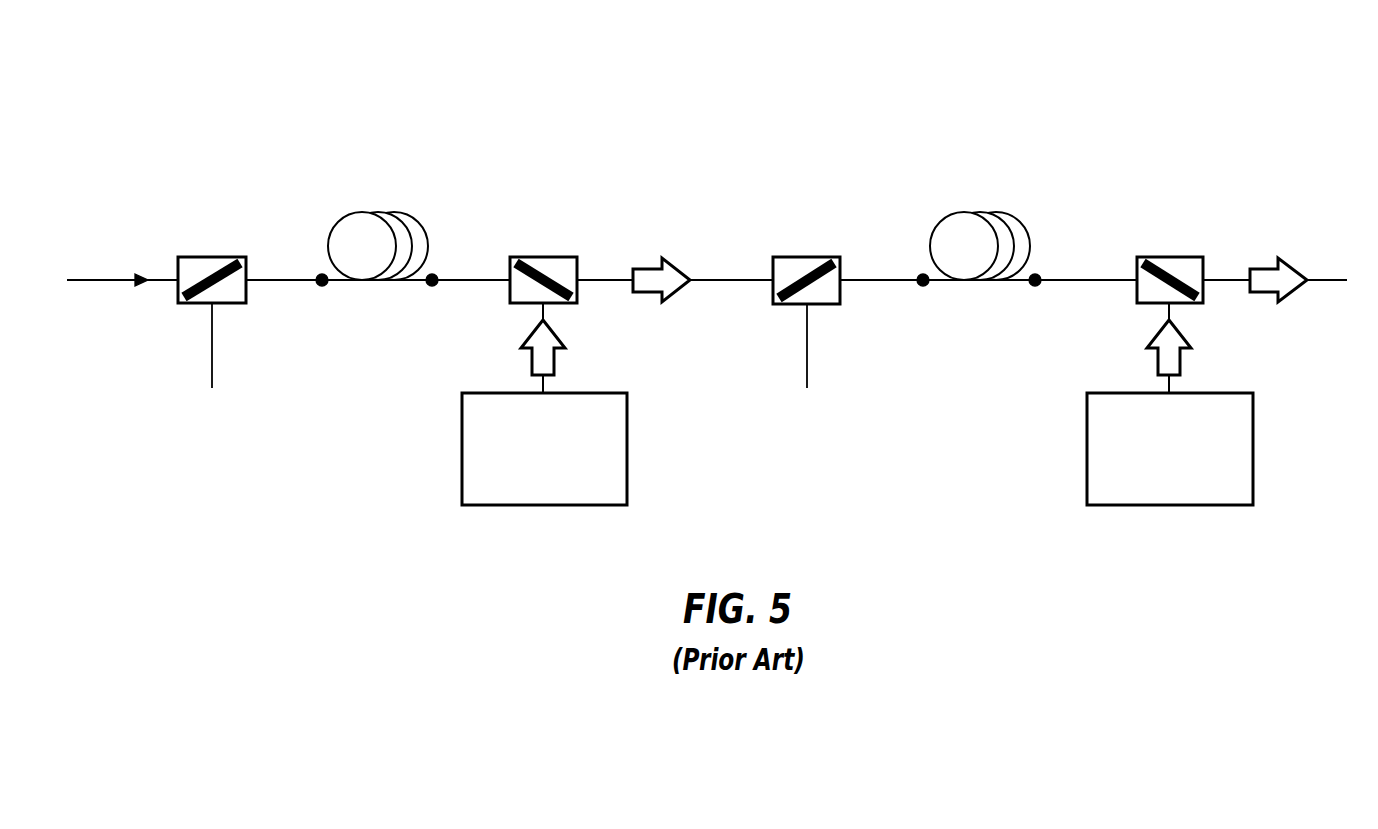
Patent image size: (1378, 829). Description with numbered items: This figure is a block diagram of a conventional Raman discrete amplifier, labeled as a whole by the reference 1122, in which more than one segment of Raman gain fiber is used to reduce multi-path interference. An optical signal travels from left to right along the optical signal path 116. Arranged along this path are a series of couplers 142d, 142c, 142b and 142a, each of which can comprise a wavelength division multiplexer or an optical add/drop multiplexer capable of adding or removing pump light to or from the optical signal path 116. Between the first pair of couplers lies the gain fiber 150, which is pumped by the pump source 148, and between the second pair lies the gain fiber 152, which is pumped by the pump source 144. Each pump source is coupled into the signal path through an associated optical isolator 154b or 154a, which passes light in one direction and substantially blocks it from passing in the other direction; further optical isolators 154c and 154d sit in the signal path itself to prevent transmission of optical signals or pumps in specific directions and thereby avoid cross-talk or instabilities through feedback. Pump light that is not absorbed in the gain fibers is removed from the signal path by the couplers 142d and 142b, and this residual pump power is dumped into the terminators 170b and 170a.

The optical signal path 116 is at (122, 267).
The coupler 142a is at (1170, 257).
The coupler 142b is at (806, 257).
The coupler 142c is at (543, 257).
The coupler 142d is at (212, 257).
The pump source 144 is at (1189, 461).
The pump source 148 is at (565, 461).
The gain fiber 150 is at (362, 212).
The gain fiber 152 is at (964, 212).
The optical isolator 154a is at (1185, 362).
The optical isolator 154b is at (558, 362).
The optical isolator 154c is at (648, 268).
The optical isolator 154d is at (1257, 268).
The terminator 170a is at (806, 375).
The terminator 170b is at (211, 375).
The prior art optical amplifier system 1122 is at (1256, 127).